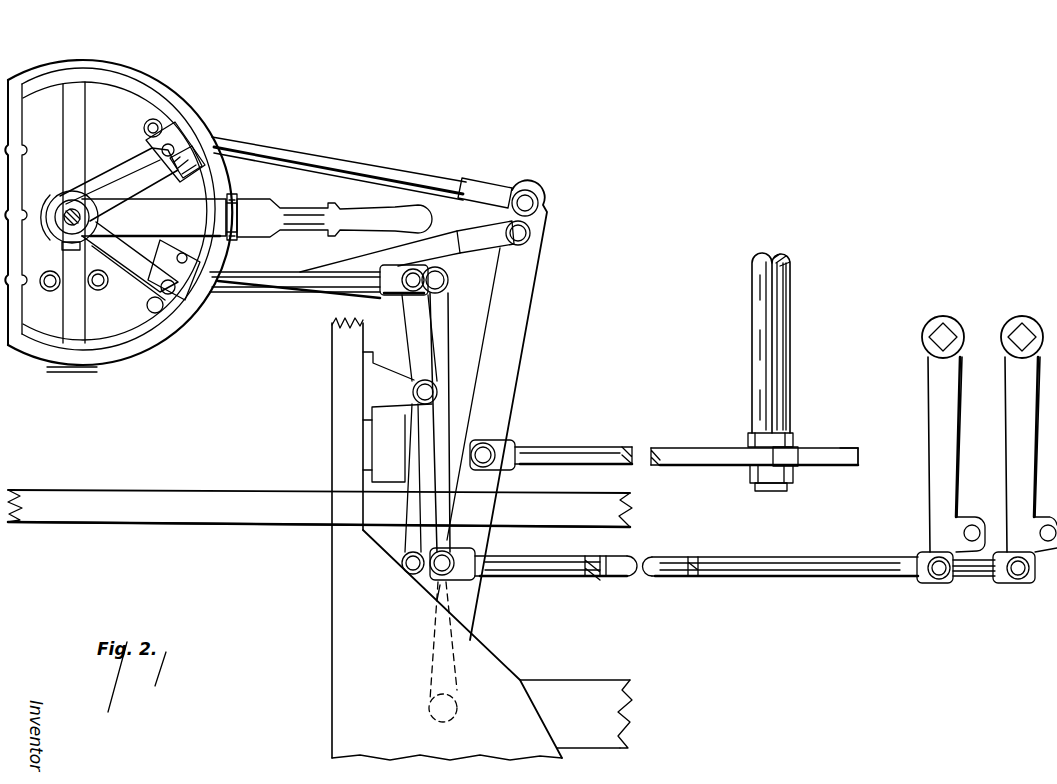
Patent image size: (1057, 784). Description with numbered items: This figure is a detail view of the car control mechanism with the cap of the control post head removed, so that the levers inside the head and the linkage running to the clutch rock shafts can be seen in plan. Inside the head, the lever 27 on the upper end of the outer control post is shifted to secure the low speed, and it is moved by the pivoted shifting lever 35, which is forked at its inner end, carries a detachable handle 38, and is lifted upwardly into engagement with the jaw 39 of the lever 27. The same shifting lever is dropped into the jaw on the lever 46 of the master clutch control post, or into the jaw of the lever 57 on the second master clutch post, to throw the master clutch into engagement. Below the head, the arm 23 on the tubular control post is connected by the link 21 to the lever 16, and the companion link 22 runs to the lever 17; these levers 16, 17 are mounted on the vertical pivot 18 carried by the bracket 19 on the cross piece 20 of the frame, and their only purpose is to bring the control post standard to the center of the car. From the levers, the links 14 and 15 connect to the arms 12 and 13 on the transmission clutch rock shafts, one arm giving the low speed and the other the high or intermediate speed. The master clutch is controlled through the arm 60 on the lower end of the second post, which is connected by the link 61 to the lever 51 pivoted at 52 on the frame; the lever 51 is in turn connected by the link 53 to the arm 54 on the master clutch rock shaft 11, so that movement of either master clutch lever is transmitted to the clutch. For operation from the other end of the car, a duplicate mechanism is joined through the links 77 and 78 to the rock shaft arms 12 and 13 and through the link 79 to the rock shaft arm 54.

The rock shaft 11 is at (771, 397).
The arm 12 is at (1006, 406).
The arm 13 is at (948, 452).
The link 14 is at (604, 560).
The link 15 is at (540, 570).
The lever 16 is at (437, 320).
The lever 17 is at (412, 341).
The vertical pivot 18 is at (435, 391).
The bracket 19 is at (385, 396).
The cross piece 20 is at (345, 438).
The link 21 is at (50, 292).
The link 22 is at (112, 285).
The arm 23 is at (53, 254).
The lever 27 is at (120, 214).
The shifting lever 35 is at (232, 207).
The detachable handle 38 is at (294, 217).
The jaw 39 is at (212, 222).
The lever 46 is at (100, 173).
The lever 51 is at (517, 323).
The pivot 52 is at (448, 712).
The link 53 is at (604, 455).
The arm 54 is at (800, 452).
The lever 57 is at (83, 287).
The arm 60 is at (144, 142).
The link 61 is at (326, 164).
The link 77 is at (972, 533).
The link 78 is at (1048, 517).
The link 79 is at (840, 468).